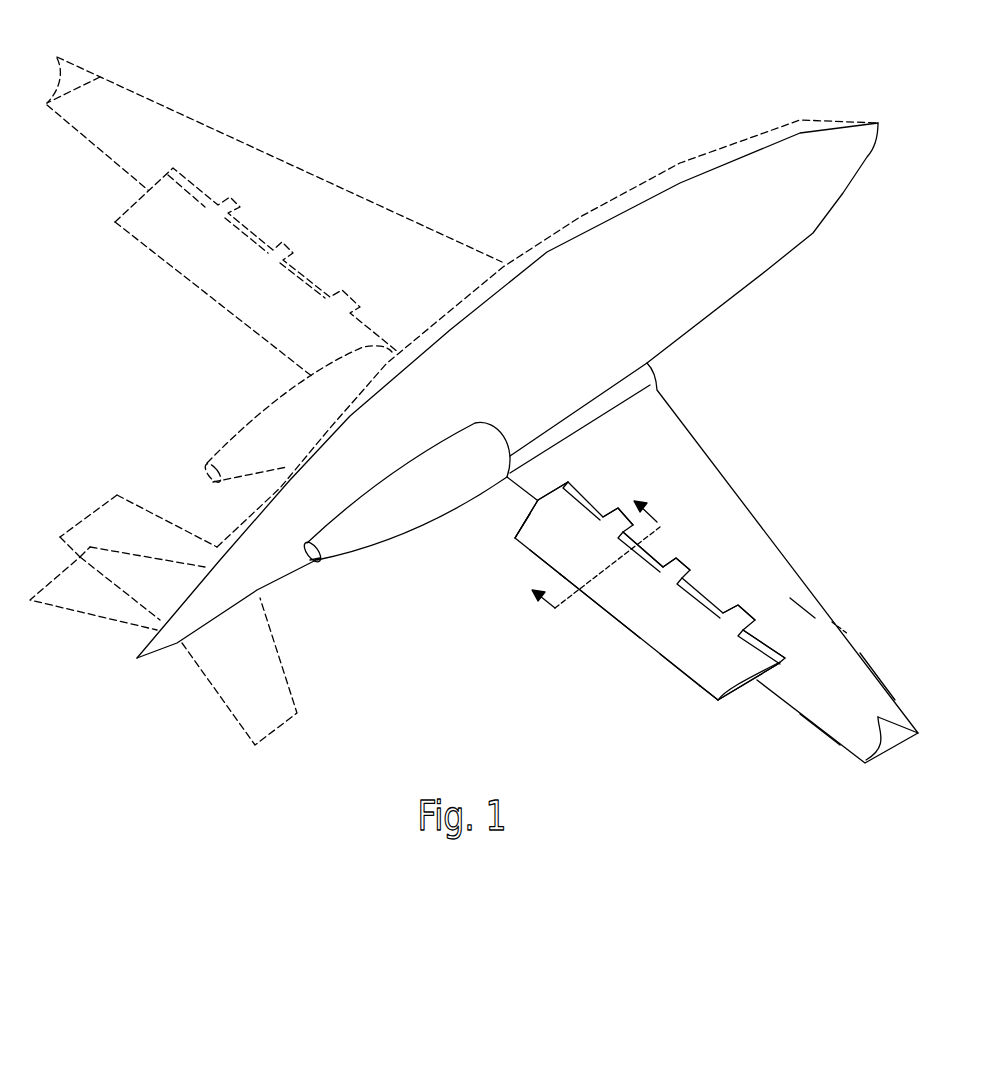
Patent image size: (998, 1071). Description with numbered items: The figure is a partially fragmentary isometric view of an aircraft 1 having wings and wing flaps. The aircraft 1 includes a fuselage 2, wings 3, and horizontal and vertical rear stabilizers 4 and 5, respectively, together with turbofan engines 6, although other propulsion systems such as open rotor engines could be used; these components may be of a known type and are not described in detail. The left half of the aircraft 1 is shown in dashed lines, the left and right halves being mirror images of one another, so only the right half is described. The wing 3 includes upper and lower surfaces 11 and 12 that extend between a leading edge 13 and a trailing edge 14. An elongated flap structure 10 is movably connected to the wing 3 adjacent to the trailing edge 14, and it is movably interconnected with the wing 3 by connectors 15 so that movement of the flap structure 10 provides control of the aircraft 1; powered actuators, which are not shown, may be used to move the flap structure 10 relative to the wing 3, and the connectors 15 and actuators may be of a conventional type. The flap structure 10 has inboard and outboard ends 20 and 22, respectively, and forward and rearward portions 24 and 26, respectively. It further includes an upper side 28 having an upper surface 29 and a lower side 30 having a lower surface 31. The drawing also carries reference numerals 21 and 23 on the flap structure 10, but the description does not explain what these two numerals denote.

The aircraft 1 is at (813, 237).
The fuselage 2 is at (738, 282).
The wings 3 is at (355, 197).
The horizontal rear stabilizers 4 is at (80, 613).
The vertical rear stabilizer 5 is at (90, 510).
The turbofan engines 6 is at (230, 440).
The flap structure 10 is at (663, 638).
The upper surface 11 is at (803, 608).
The lower surface 12 is at (840, 628).
The leading edge 13 is at (880, 677).
The trailing edge 14 is at (820, 732).
The connectors 15 is at (683, 557).
The inboard end 20 is at (522, 527).
The front top edge 21 is at (530, 513).
The outboard end 22 is at (740, 687).
The rear wall 23 is at (730, 693).
The forward portion 24 is at (653, 567).
The rearward portion 26 is at (628, 627).
The upper side 28 is at (693, 653).
The upper surface 29 is at (707, 678).
The lower side 30 is at (520, 545).
The lower surface 31 is at (547, 566).